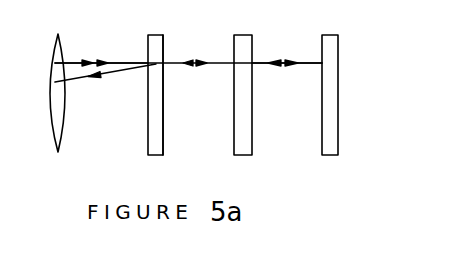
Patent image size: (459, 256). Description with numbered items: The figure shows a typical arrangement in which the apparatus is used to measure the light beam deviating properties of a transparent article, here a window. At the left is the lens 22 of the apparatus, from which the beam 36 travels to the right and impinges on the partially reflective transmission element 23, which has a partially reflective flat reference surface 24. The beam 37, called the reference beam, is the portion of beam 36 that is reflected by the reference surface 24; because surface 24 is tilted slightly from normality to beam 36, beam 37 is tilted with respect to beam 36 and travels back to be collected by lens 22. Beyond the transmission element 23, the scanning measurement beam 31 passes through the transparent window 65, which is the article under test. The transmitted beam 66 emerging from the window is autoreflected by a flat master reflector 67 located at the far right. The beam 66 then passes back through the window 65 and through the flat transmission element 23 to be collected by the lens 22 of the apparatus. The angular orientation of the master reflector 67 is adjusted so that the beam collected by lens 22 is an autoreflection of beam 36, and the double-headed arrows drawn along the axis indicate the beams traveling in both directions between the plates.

The lens 22 is at (55, 50).
The partially reflective transmission element 23 is at (147, 155).
The partially reflective flat reference surface 24 is at (165, 142).
The scanning measurement beam 31 is at (203, 62).
The beam 36 is at (90, 61).
The reference beam 37 is at (76, 79).
The transparent window 65 is at (241, 14).
The transmitted beam 66 is at (264, 67).
The flat master reflector 67 is at (322, 48).